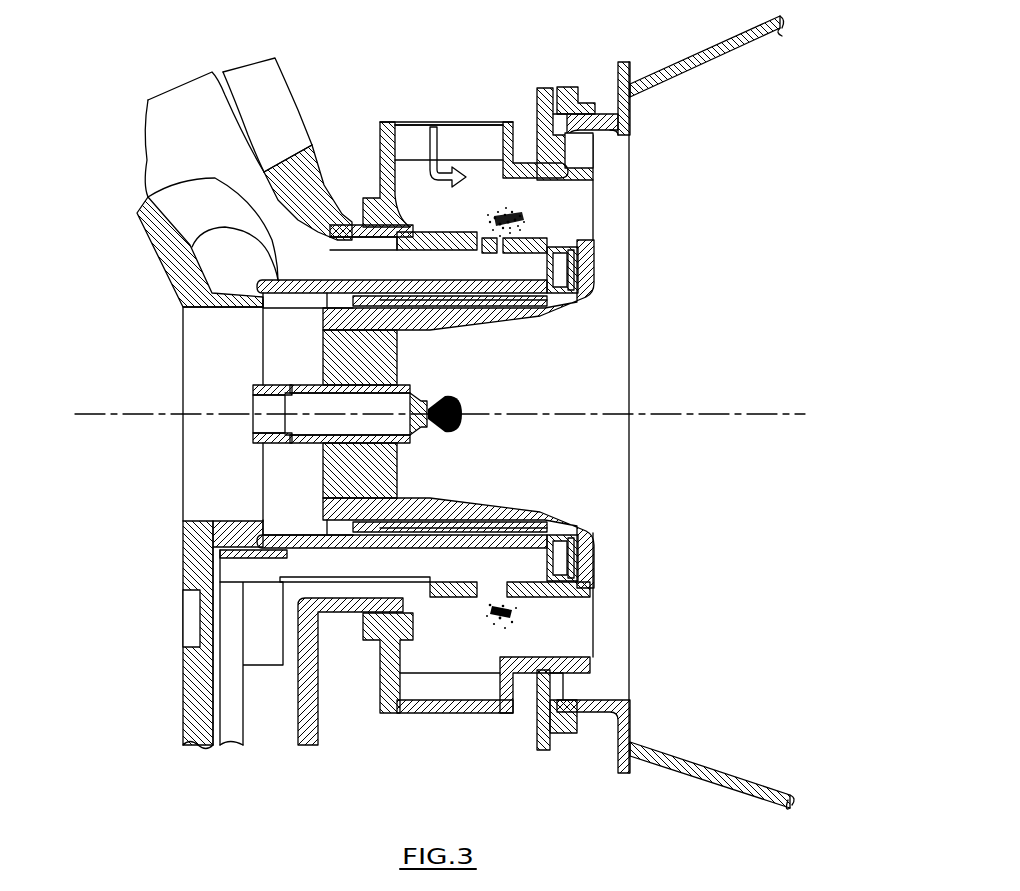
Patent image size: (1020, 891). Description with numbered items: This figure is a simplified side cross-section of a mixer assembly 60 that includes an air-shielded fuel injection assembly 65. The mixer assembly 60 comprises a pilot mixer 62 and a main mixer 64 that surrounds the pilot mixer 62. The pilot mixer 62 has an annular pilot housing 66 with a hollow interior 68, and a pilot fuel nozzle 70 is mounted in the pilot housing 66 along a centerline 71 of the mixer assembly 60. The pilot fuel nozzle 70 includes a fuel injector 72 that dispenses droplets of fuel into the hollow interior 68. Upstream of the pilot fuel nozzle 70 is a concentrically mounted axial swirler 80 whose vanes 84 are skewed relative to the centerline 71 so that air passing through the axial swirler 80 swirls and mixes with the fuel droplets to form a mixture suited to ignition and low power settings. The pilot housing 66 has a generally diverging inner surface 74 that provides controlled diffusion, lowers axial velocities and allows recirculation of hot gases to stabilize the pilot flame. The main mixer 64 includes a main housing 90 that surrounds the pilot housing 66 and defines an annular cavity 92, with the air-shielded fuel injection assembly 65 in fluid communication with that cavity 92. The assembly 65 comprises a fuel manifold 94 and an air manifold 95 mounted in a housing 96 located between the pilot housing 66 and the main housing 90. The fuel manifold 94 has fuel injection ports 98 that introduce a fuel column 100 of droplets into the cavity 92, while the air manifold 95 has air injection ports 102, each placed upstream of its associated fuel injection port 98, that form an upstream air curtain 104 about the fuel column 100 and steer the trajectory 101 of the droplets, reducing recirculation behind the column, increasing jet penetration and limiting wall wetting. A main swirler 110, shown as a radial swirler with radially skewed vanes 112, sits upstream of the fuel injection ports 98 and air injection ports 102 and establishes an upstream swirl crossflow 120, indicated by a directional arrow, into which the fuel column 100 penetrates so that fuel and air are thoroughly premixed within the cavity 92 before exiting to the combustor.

The mixer assembly 60 is at (97, 58).
The pilot mixer 62 is at (481, 382).
The main mixer 64 is at (592, 200).
The air-shielded fuel injection assembly 65 is at (522, 180).
The annular pilot housing 66 is at (583, 300).
The hollow interior 68 is at (563, 455).
The pilot fuel nozzle 70 is at (434, 450).
The centerline 71 is at (673, 417).
The fuel injector 72 is at (437, 393).
The diverging inner surface 74 is at (545, 318).
The axial swirler 80 is at (300, 366).
The vanes 84 is at (395, 472).
The main housing 90 is at (603, 168).
The annular cavity 92 is at (498, 183).
The fuel manifold 94 is at (207, 228).
The air manifold 95 is at (336, 214).
The housing 96 is at (583, 264).
The fuel injection ports 98 is at (524, 220).
The fuel column 100 is at (528, 204).
The trajectory 101 is at (500, 207).
The air injection ports 102 is at (460, 240).
The air curtain 104 is at (480, 222).
The swirler 110 is at (432, 90).
The radially skewed vanes 112 is at (469, 120).
The upstream swirl crossflow 120 is at (427, 138).